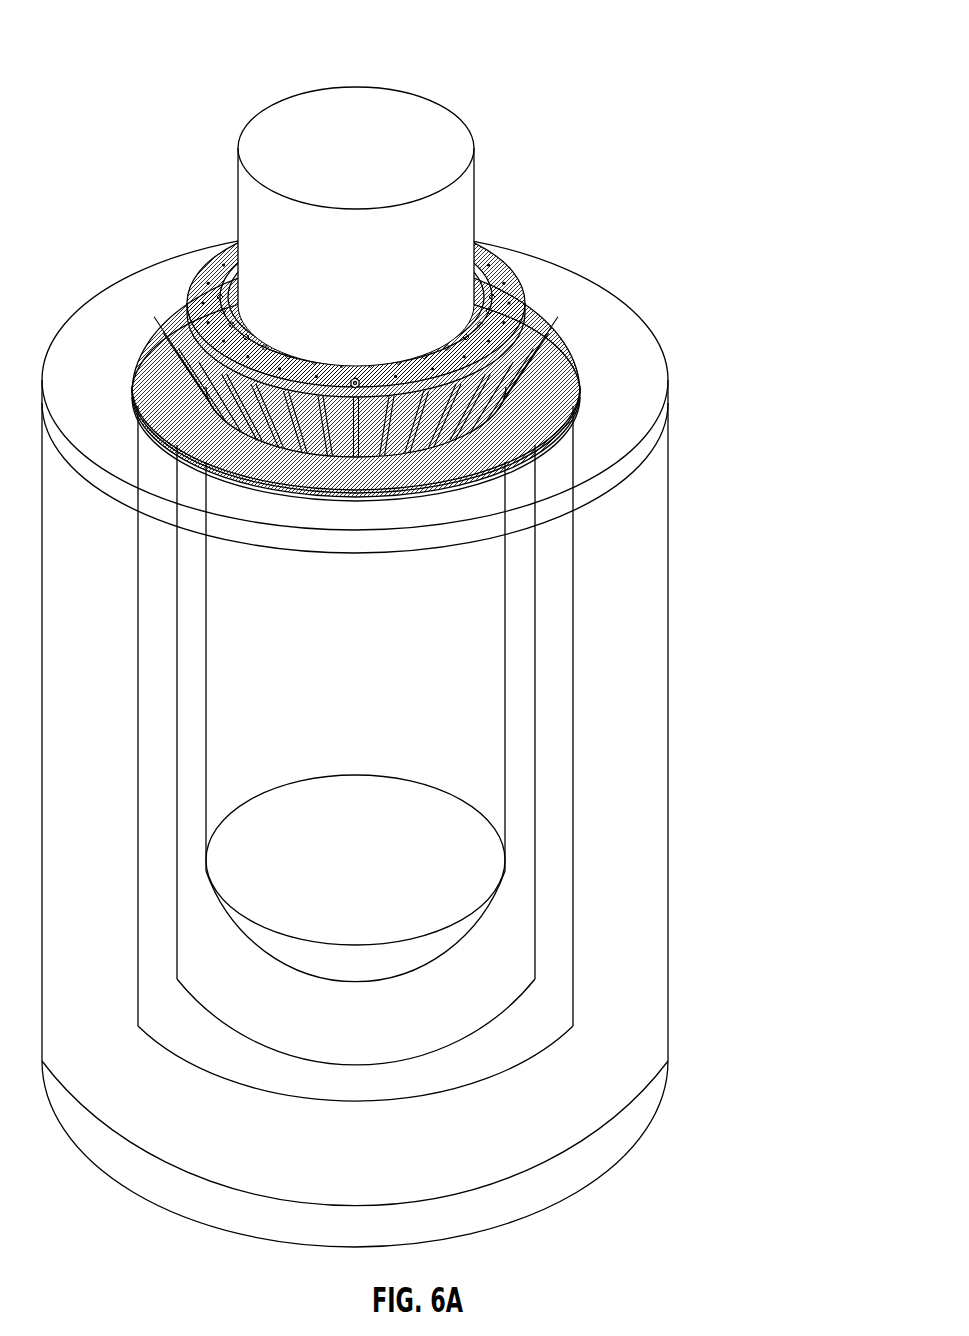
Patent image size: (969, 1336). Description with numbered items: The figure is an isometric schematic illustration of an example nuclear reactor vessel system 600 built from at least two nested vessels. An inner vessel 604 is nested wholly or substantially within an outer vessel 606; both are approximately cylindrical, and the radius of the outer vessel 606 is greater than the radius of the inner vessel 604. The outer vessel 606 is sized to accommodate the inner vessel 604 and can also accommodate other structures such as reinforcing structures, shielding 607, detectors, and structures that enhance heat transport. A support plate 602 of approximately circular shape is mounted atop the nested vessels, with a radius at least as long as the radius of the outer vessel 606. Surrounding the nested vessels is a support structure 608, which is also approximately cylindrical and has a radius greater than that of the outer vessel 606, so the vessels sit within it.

The nuclear reactor vessel system 600 is at (136, 82).
The support plate 602 is at (520, 325).
The inner vessel 604 is at (536, 665).
The outer vessel 606 is at (573, 783).
The shielding 607 is at (552, 902).
The support structure 608 is at (668, 835).